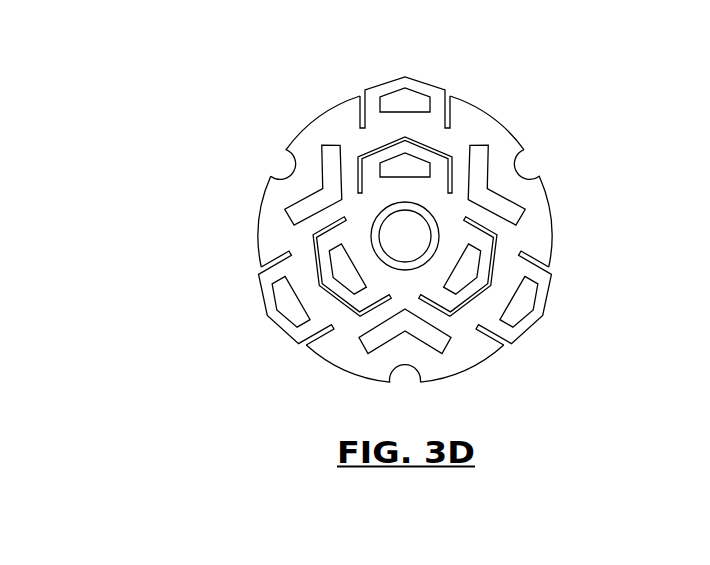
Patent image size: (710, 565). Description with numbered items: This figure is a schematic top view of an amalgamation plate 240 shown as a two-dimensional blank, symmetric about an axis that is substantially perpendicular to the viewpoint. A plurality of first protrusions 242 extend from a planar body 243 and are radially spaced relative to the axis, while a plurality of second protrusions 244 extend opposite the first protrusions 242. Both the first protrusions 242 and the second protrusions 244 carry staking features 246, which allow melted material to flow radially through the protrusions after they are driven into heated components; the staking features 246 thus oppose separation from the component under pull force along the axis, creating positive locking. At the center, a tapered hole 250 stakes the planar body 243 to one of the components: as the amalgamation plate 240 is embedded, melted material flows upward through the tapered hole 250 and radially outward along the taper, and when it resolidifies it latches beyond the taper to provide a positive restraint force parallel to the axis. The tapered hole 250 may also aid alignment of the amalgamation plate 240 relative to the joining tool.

The amalgamation plate 240 is at (208, 85).
The first protrusions 242 is at (437, 113).
The planar body 243 is at (341, 123).
The second protrusions 244 is at (368, 170).
The staking features 246 is at (405, 88).
The tapered hole 250 is at (400, 270).